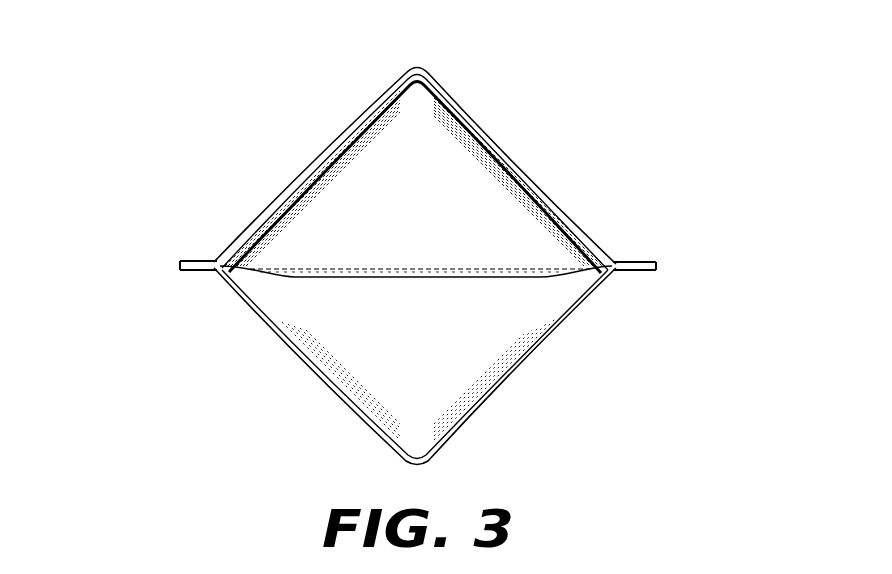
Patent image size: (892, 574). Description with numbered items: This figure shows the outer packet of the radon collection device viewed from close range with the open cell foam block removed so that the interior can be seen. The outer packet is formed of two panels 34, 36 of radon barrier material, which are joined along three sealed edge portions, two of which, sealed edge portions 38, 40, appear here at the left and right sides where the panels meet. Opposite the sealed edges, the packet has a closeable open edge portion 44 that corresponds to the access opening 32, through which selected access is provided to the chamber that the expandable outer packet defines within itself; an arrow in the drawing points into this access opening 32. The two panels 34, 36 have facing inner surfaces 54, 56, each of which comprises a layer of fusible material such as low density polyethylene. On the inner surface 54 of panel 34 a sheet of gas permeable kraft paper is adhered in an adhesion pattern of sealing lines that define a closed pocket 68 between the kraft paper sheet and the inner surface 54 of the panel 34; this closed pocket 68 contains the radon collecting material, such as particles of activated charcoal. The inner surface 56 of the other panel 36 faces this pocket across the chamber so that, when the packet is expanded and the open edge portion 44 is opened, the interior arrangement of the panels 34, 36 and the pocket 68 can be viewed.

The access opening 32 is at (415, 133).
The panel 34 is at (368, 105).
The panel 36 is at (295, 348).
The sealed edge portion 38 is at (197, 260).
The sealed edge portion 40 is at (642, 260).
The closeable open edge portion 44 is at (552, 192).
The inner surface 54 is at (296, 205).
The inner surface 56 is at (513, 320).
The closed pocket 68 is at (462, 205).